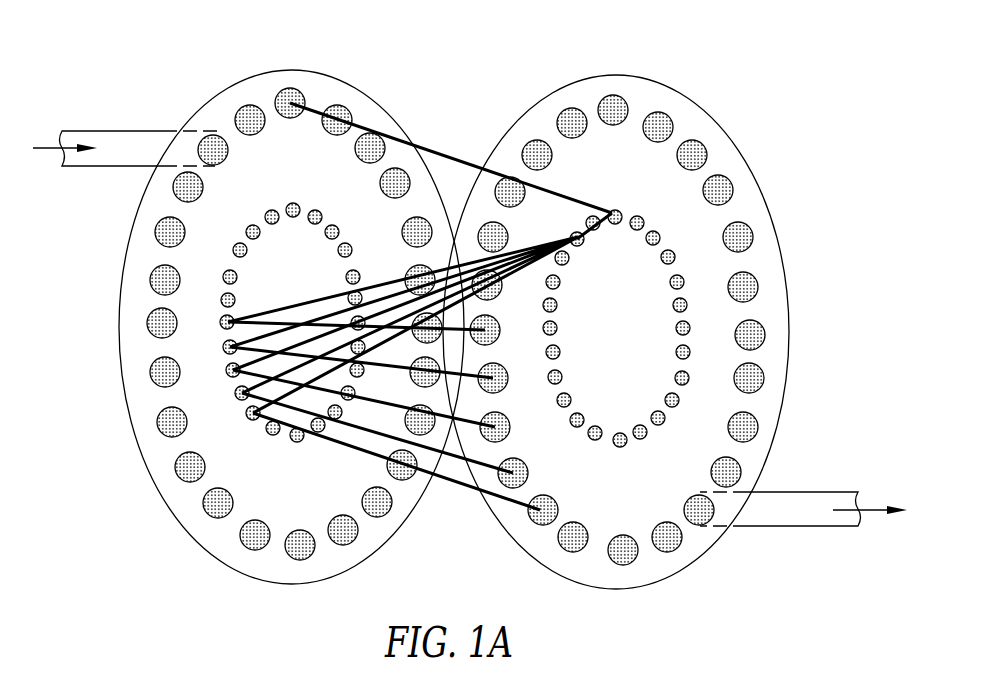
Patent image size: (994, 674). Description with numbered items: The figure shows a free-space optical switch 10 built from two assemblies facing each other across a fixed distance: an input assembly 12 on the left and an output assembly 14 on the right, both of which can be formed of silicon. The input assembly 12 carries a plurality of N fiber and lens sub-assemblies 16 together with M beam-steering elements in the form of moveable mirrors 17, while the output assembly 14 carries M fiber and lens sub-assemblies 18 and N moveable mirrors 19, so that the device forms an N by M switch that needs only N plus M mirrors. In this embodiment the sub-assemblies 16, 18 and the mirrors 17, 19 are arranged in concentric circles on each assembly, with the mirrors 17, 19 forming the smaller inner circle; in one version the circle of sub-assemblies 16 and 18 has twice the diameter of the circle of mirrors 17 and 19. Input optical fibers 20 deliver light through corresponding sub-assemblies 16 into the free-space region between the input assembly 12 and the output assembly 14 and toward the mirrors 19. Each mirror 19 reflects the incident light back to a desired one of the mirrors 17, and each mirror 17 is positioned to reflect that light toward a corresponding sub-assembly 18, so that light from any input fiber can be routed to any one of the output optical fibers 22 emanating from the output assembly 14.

The free-space optical switch 10 is at (482, 82).
The input assembly 12 is at (165, 500).
The output assembly 14 is at (648, 88).
The fiber and lens sub-assemblies 16 is at (147, 327).
The moveable mirrors 17 is at (268, 212).
The fiber and lens sub-assemblies 18 is at (730, 182).
The moveable mirrors 19 is at (669, 282).
The input optical fibers 20 is at (112, 131).
The output optical fibers 22 is at (803, 527).